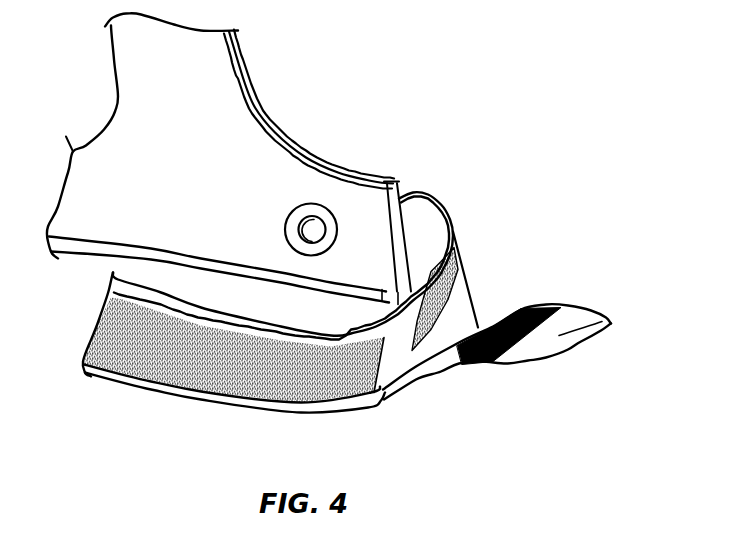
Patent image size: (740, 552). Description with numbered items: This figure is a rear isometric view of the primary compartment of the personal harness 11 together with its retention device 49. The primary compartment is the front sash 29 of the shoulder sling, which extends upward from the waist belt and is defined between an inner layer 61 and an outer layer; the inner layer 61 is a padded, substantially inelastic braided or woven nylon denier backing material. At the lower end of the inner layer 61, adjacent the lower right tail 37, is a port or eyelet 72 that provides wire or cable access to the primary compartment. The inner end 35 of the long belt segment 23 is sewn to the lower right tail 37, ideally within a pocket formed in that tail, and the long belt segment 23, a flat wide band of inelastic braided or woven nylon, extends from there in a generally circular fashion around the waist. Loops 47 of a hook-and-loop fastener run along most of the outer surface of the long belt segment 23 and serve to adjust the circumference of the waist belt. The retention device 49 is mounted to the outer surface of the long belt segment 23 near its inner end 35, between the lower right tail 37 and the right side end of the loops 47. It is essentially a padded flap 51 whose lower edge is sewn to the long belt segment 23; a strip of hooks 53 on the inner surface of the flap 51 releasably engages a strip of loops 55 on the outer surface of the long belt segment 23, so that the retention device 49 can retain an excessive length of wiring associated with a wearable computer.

The personal harness 11 is at (423, 37).
The front sash 29 is at (263, 91).
The inner layer 61 is at (127, 107).
The eyelet 72 is at (309, 212).
The lower right tail 37 is at (372, 203).
The inner end 35 is at (415, 227).
The retention device 49 is at (571, 199).
The strip of loops 55 is at (457, 247).
The strip of hooks 53 is at (540, 312).
The padded flap 51 is at (578, 317).
The long belt segment 23 is at (183, 399).
The loops 47 is at (321, 383).